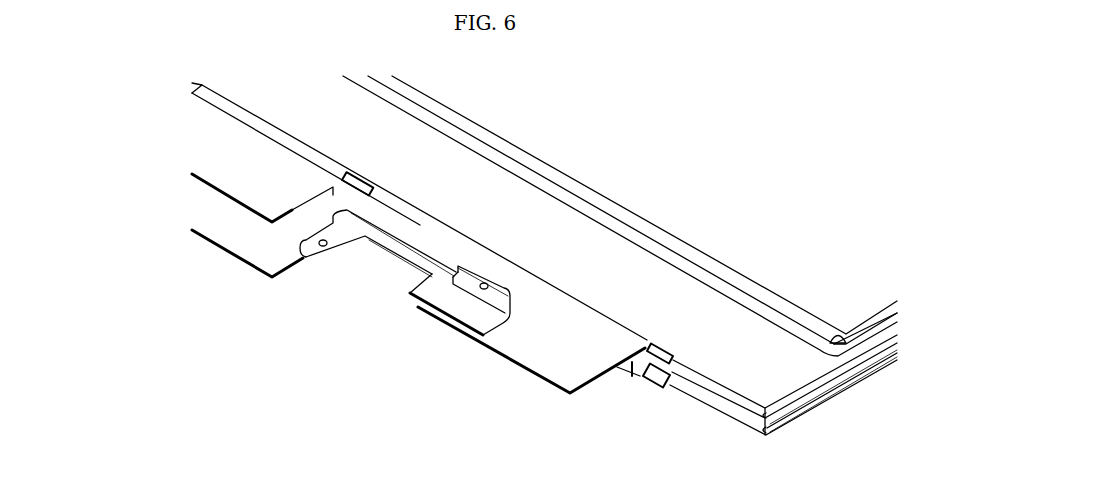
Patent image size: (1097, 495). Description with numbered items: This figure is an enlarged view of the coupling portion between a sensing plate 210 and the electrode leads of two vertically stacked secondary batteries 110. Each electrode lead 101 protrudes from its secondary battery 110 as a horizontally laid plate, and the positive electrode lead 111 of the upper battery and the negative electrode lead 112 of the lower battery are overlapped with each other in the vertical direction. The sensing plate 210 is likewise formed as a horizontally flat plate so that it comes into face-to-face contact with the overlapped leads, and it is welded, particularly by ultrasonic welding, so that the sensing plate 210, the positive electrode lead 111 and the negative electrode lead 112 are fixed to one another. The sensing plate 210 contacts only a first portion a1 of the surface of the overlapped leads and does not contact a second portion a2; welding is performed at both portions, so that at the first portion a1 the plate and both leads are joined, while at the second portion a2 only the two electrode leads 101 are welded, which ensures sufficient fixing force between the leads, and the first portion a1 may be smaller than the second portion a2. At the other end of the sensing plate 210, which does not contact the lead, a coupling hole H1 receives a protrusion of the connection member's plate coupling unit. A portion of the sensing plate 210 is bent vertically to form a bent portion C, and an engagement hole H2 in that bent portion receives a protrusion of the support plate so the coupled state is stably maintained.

The electrode lead 101 is at (120, 163).
The secondary battery 110 is at (741, 408).
The positive electrode lead 111 is at (215, 218).
The negative electrode lead 112 is at (215, 163).
The sensing plate 210 is at (403, 248).
The coupling hole H1 is at (332, 250).
The engagement hole H2 is at (490, 288).
The bent portion C is at (518, 303).
The first portion a1 is at (453, 345).
The second portion a2 is at (553, 397).